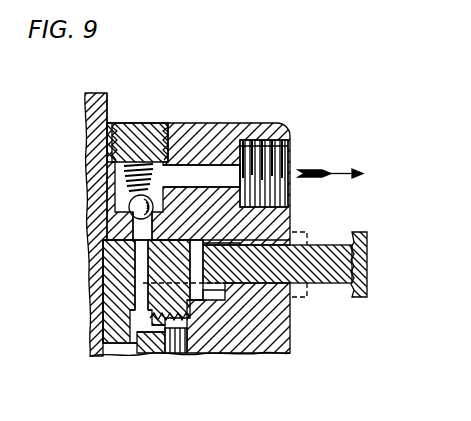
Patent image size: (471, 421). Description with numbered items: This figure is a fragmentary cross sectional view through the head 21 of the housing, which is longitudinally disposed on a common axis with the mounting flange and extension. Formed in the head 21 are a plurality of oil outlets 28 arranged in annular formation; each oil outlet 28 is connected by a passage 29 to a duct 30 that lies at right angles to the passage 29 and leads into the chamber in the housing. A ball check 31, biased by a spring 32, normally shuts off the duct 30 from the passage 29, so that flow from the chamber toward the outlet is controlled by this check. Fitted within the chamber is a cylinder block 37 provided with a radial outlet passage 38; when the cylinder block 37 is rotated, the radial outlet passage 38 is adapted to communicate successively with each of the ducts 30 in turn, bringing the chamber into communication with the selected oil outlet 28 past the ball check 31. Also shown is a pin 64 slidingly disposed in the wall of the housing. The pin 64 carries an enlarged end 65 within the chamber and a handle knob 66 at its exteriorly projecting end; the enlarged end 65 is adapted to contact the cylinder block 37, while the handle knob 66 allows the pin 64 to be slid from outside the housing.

The head 21 is at (268, 134).
The oil outlets 28 is at (284, 153).
The passage 29 is at (217, 173).
The duct 30 is at (140, 230).
The ball check 31 is at (137, 203).
The spring 32 is at (121, 162).
The cylinder block 37 is at (113, 280).
The radial outlet passage 38 is at (137, 310).
The pin 64 is at (324, 247).
The enlarged end 65 is at (213, 292).
The handle knob 66 is at (352, 290).